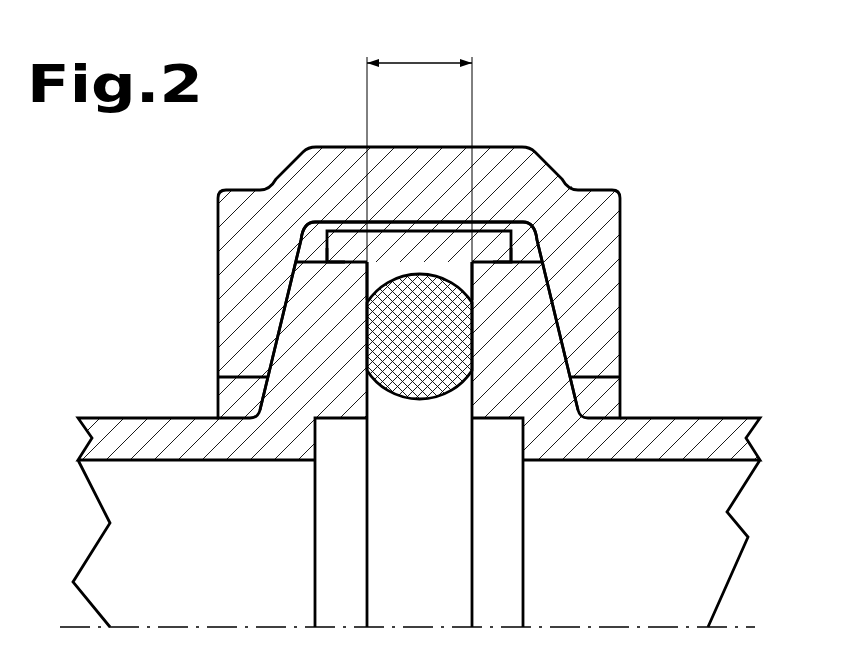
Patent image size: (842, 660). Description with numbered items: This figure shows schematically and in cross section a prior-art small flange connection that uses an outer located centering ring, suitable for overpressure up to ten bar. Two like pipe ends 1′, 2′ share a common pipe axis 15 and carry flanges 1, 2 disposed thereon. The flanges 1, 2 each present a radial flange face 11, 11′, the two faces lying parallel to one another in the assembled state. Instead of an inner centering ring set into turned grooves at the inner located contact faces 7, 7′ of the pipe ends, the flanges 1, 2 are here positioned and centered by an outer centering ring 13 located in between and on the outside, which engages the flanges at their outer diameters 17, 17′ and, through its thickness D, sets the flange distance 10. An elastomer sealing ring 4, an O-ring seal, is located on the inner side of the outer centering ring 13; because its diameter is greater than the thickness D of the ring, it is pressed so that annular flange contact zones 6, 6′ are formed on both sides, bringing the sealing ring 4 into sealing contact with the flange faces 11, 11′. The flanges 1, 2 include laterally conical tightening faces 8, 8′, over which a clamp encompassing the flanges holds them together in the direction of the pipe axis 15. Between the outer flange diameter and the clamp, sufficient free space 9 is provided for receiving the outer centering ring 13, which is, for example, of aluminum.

The flange 1 is at (327, 382).
The flange 2 is at (518, 385).
The pipe end 1′ is at (167, 437).
The pipe end 2′ is at (670, 443).
The elastomer sealing ring 4 is at (420, 348).
The annular flange contact zone 6 is at (366, 335).
The annular flange contact zone 6′ is at (473, 335).
The inner located contact face 7 is at (347, 418).
The inner located contact face 7′ is at (498, 418).
The conical tightening face 8 is at (290, 289).
The conical tightening face 8′ is at (548, 290).
The free space 9 is at (488, 218).
The flange distance 10 is at (382, 43).
The flange face 11 is at (364, 280).
The flange face 11′ is at (474, 280).
The outer centering ring 13 is at (444, 255).
The pipe axis 15 is at (582, 627).
The outer diameter 17 is at (355, 254).
The outer diameter 17′ is at (498, 258).